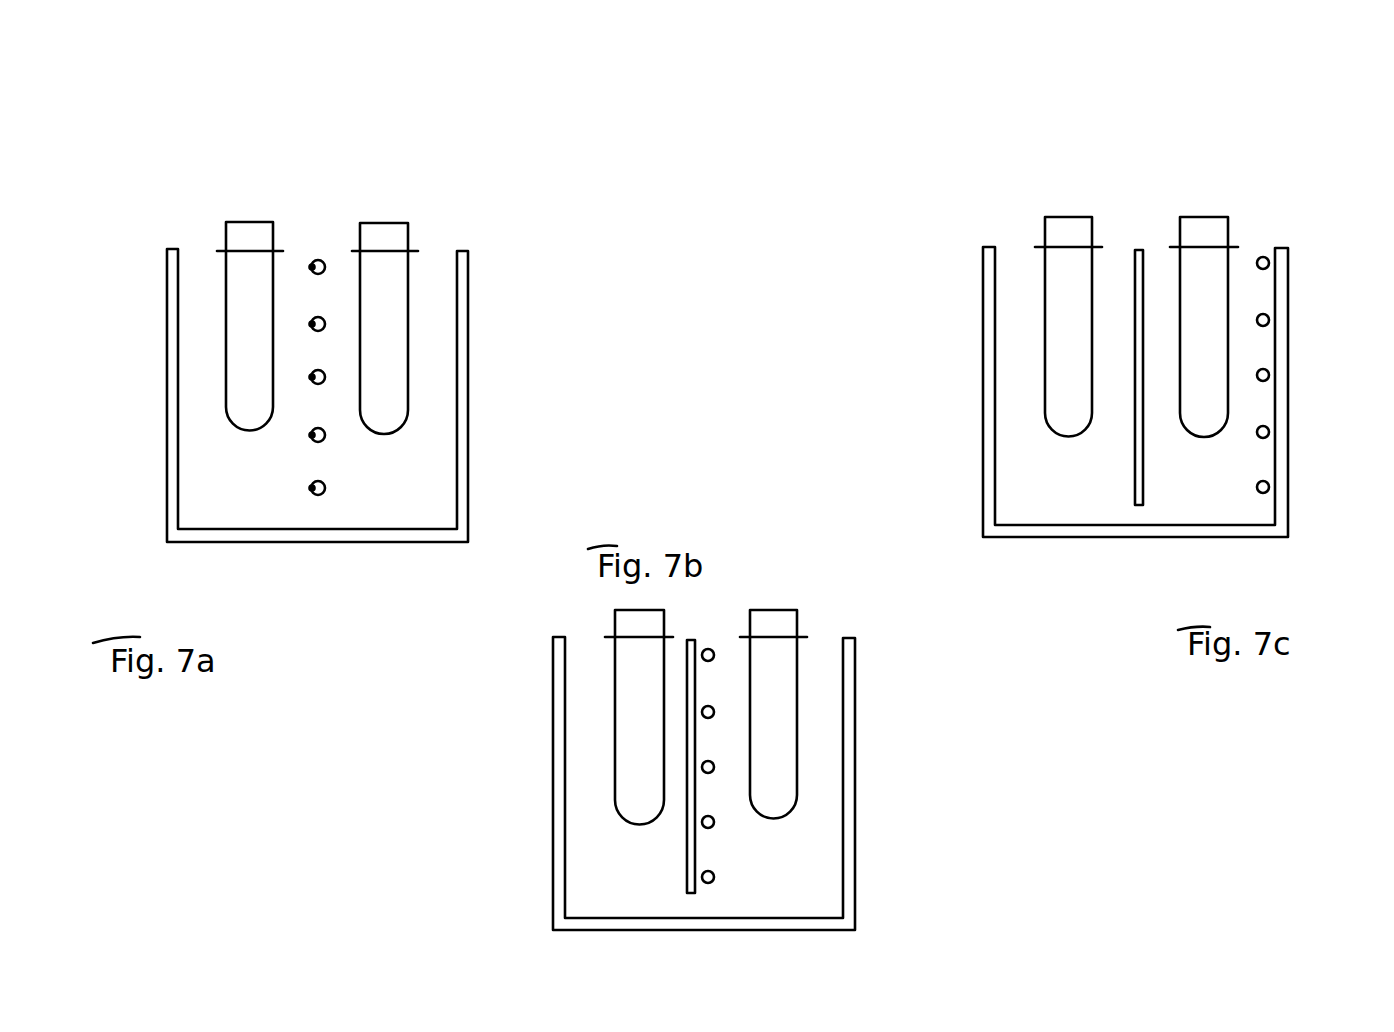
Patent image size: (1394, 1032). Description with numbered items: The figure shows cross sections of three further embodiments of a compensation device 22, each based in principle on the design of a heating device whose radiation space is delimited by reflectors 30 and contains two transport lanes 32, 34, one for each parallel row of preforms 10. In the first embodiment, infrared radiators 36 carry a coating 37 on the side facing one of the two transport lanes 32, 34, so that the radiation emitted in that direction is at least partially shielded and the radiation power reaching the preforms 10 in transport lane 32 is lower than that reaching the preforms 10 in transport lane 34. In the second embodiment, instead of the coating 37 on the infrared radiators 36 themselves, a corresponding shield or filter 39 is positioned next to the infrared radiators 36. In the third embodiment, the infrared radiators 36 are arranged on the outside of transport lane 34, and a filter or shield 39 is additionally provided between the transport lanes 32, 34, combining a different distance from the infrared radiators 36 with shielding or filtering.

In FIG. 7A, the preform 10 is at (243, 313).
In FIG. 7B, the preform 10 is at (637, 795).
In FIG. 7C, the preform 10 is at (1197, 265).
In FIG. 7A, the compensation device 22 is at (150, 175).
In FIG. 7B, the compensation device 22 is at (784, 560).
In FIG. 7C, the compensation device 22 is at (940, 183).
In FIG. 7A, the reflector 30 is at (170, 258).
In FIG. 7B, the reflector 30 is at (557, 900).
In FIG. 7C, the reflector 30 is at (990, 435).
In FIG. 7A, the transport lane 32 is at (240, 503).
In FIG. 7B, the transport lane 32 is at (628, 890).
In FIG. 7C, the transport lane 32 is at (1067, 497).
In FIG. 7A, the transport lane 34 is at (392, 497).
In FIG. 7B, the transport lane 34 is at (787, 870).
In FIG. 7C, the transport lane 34 is at (1210, 497).
In FIG. 7A, the infrared radiator 36 is at (322, 261).
In FIG. 7B, the infrared radiator 36 is at (701, 655).
In FIG. 7C, the infrared radiator 36 is at (1270, 263).
In FIG. 7A, the coating 37 is at (310, 268).
In FIG. 7B, the shield or filter 39 is at (690, 690).
In FIG. 7C, the shield or filter 39 is at (1137, 327).